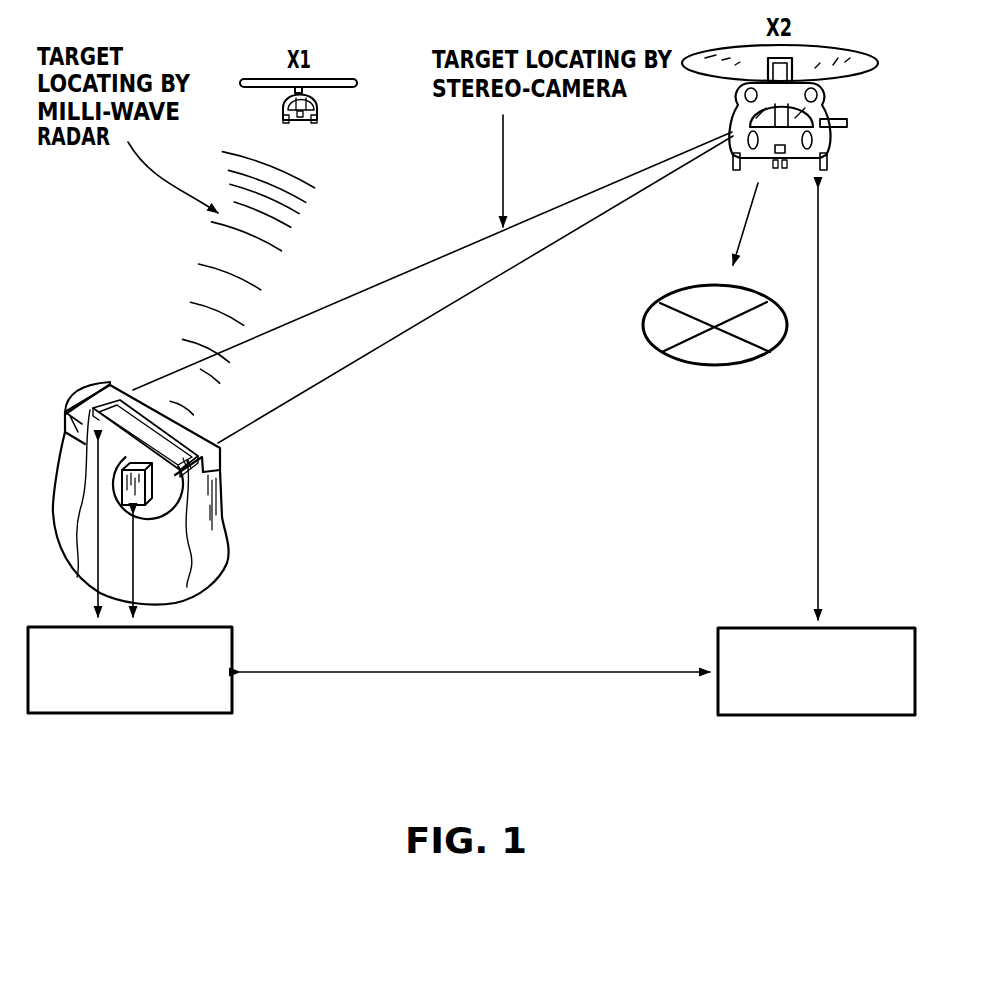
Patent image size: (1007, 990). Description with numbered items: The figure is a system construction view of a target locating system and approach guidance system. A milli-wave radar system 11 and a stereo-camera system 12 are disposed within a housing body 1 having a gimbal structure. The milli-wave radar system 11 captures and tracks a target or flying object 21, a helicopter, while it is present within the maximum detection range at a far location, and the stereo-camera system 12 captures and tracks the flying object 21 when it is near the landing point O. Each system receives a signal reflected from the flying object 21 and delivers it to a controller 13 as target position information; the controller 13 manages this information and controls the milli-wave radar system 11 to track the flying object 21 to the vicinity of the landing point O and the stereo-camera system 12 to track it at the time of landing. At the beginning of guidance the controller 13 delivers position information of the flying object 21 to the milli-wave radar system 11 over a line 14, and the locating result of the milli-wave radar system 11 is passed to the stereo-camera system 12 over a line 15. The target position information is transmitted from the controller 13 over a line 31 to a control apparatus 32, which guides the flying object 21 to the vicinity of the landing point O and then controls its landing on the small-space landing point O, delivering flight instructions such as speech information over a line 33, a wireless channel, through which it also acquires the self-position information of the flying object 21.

The housing body 1 is at (132, 468).
The milli-wave radar system 11 is at (148, 514).
The stereo-camera system 12 is at (108, 400).
The controller 13 is at (212, 715).
The line 14 is at (113, 529).
The line 15 is at (97, 570).
The flying object 21 is at (320, 118).
The line 31 is at (451, 670).
The control apparatus 32 is at (867, 717).
The line 33 is at (820, 342).
The landing point O is at (716, 366).